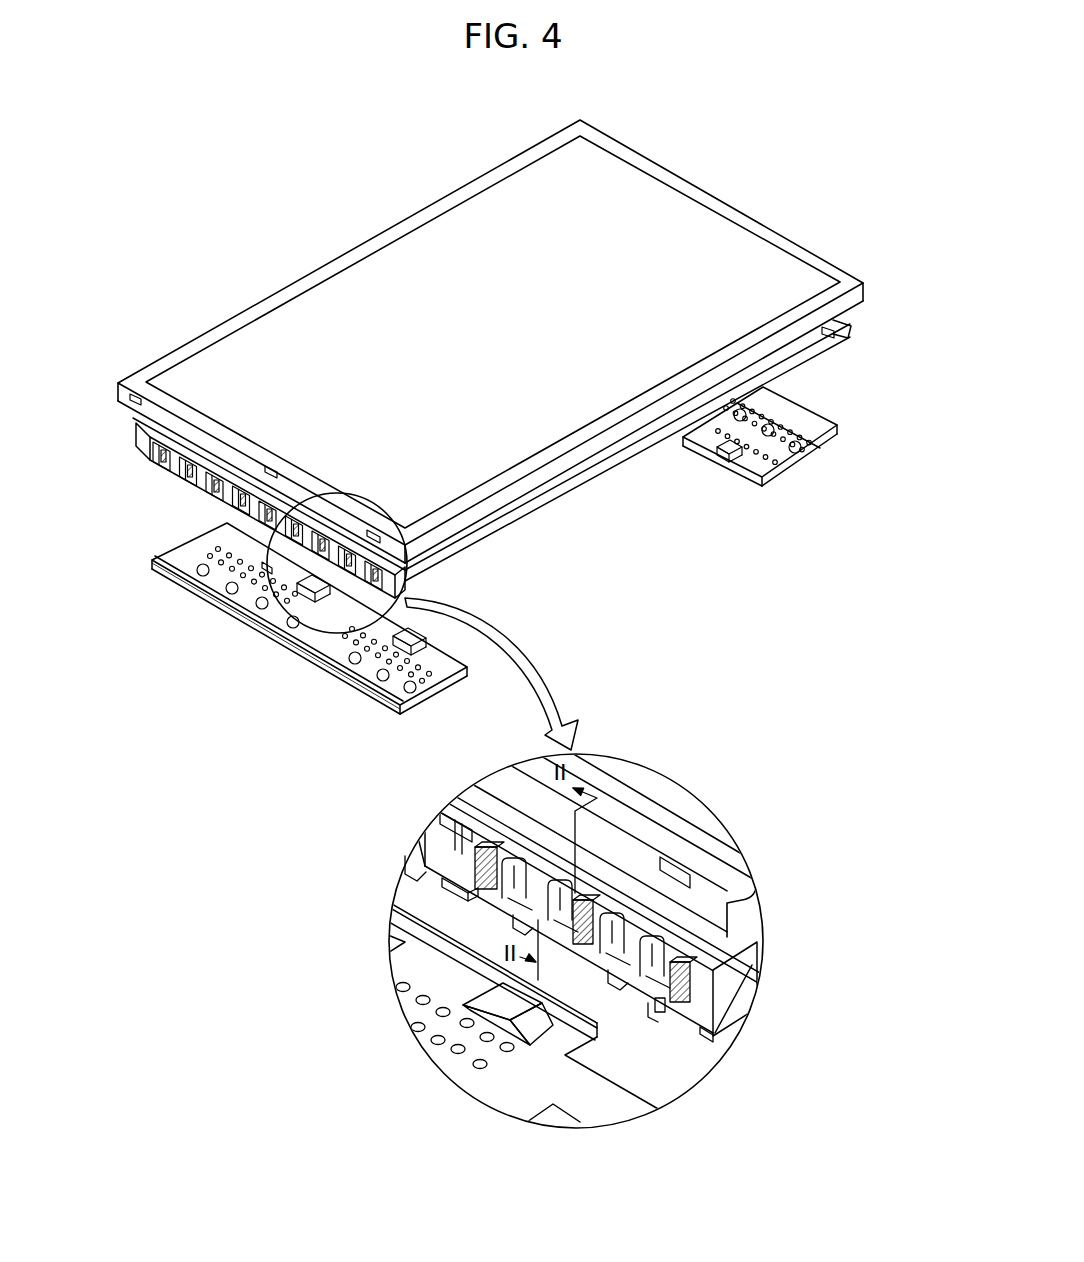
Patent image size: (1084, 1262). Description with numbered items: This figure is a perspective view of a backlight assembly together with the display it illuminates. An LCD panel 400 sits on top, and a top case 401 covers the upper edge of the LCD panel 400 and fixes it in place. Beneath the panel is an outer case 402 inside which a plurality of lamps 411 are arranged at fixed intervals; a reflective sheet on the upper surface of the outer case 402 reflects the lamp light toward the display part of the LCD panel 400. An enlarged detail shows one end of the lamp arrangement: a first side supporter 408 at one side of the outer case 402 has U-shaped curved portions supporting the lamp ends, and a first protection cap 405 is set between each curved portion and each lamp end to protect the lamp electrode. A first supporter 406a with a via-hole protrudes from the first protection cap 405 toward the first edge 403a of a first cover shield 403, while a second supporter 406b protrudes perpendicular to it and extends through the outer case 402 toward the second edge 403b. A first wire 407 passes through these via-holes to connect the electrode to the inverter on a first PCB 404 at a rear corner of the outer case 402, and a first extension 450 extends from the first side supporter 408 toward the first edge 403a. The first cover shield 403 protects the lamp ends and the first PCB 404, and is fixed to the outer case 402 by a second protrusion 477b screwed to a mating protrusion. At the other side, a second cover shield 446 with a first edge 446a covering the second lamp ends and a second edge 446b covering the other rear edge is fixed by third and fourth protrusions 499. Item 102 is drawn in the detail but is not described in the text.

The LCD panel 400 is at (343, 292).
The top case 401 is at (167, 362).
The outer case 402 is at (140, 431).
The first cover shield 403 is at (406, 828).
The first edge 403a is at (320, 615).
The second edge 403b is at (183, 567).
The first PCB 404 is at (716, 1038).
The first protection cap 405 is at (447, 830).
The first supporter 406a is at (657, 1008).
The second supporter 406b is at (660, 1007).
The first wire 407 is at (417, 868).
The first side supporter 408 is at (503, 843).
The lamps 411 is at (800, 345).
The second cover shield 446 is at (774, 477).
The first edge 446a is at (832, 448).
The second edge 446b is at (758, 468).
The first extension 450 is at (460, 880).
The second protrusion 477b is at (267, 567).
The third and fourth protrusions 499 is at (717, 455).
The end plate 102 is at (730, 995).